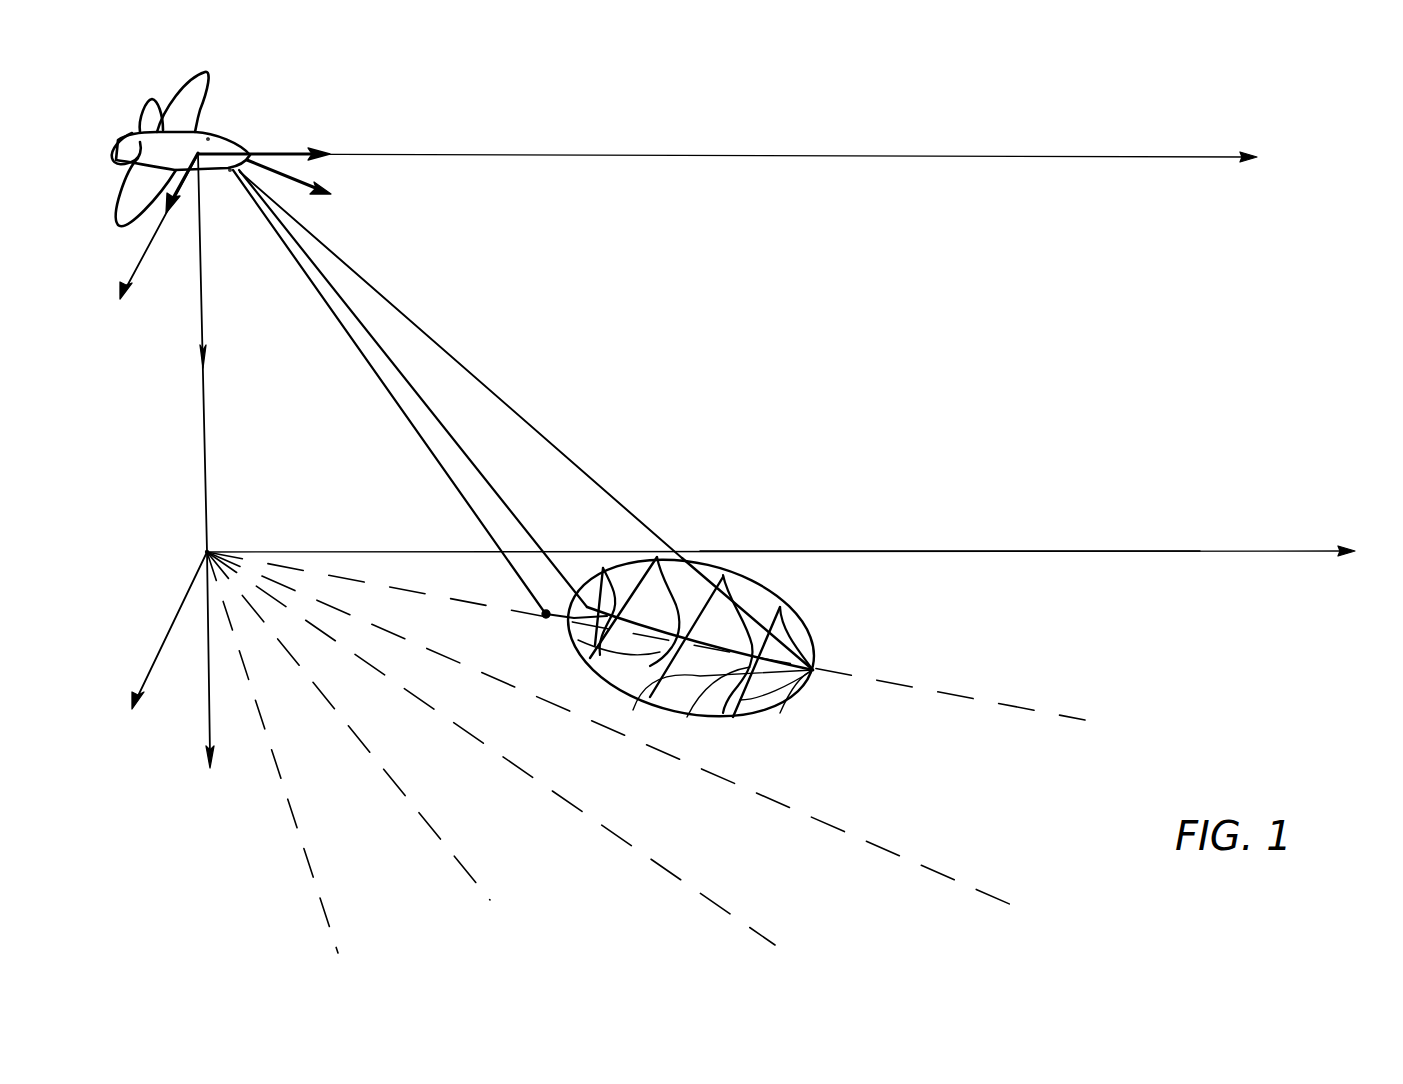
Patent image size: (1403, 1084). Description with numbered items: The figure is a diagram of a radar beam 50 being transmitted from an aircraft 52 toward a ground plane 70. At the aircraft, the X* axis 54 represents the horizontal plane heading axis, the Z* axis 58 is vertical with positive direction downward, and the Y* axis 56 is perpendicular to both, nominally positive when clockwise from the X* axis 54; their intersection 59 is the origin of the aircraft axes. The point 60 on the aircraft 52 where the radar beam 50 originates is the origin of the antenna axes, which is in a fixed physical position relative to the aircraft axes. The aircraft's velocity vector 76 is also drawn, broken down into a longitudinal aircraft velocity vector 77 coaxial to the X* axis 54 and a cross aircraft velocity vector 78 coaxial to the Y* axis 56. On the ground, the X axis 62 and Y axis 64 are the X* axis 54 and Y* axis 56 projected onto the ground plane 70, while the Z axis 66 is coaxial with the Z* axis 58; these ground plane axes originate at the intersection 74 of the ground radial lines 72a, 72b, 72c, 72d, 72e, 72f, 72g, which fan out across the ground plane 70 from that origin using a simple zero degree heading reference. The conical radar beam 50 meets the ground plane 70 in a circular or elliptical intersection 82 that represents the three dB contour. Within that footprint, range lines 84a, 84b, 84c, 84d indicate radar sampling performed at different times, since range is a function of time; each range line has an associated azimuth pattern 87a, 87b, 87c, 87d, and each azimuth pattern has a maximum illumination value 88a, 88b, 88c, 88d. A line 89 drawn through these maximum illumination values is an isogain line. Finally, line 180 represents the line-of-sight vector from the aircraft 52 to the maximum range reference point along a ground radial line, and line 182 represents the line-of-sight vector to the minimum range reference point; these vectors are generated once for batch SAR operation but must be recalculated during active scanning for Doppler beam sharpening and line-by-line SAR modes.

The radar beam 50 is at (480, 417).
The aircraft 52 is at (148, 100).
The X* axis 54 is at (1140, 156).
The Y* axis 56 is at (142, 272).
The Z* axis 58 is at (198, 340).
The intersection of aircraft axes 59 is at (210, 146).
The origin of antenna axes 60 is at (231, 170).
The X axis 62 is at (1247, 550).
The Y axis 64 is at (166, 640).
The Z axis 66 is at (208, 690).
The ground plane 70 is at (1191, 601).
The ground radial line 72a is at (950, 550).
The ground radial line 72b is at (1008, 706).
The ground radial line 72c is at (912, 863).
The ground radial line 72d is at (666, 868).
The ground radial line 72e is at (462, 865).
The ground radial line 72f is at (311, 865).
The ground radial line 72g is at (213, 747).
The intersection of ground radial lines 74 is at (210, 551).
The velocity vector 76 is at (310, 181).
The longitudinal aircraft velocity vector 77 is at (285, 152).
The cross aircraft velocity vector 78 is at (172, 198).
The intersection of radar beam with ground plane 82 is at (586, 648).
The range line 84a is at (738, 715).
The range line 84b is at (648, 697).
The range line 84c is at (593, 660).
The range line 84d is at (590, 577).
The azimuth pattern 87a is at (805, 630).
The azimuth pattern 87b is at (752, 606).
The azimuth pattern 87c is at (667, 575).
The azimuth pattern 87d is at (605, 562).
The maximum illumination value 88a is at (815, 671).
The maximum illumination value 88b is at (701, 708).
The maximum illumination value 88c is at (616, 678).
The maximum illumination value 88d is at (570, 633).
The isogain line 89 is at (783, 714).
The line-of-sight vector for maximum range reference point 180 is at (468, 368).
The line-of-sight vector for minimum range reference point 182 is at (373, 373).